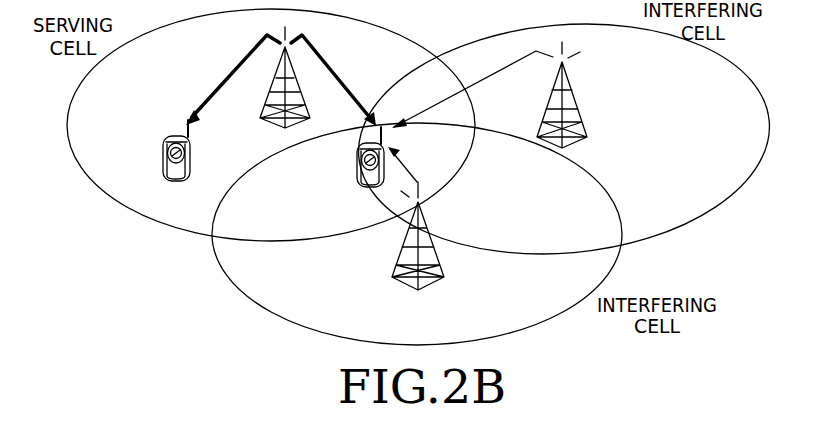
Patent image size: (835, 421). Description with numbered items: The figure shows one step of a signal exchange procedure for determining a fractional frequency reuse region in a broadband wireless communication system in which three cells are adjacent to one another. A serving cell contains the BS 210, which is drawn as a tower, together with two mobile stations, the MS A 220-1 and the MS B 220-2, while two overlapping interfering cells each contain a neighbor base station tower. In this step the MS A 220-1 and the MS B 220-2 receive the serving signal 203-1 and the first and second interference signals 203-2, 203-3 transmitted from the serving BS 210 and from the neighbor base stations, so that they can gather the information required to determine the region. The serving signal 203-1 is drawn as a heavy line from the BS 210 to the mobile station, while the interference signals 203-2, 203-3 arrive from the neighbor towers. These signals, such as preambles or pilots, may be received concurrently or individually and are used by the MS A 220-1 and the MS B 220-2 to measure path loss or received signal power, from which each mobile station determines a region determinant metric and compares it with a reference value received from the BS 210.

The BS 210 is at (285, 101).
The MS A 220-1 is at (342, 174).
The MS B 220-2 is at (142, 150).
The signal S_A 203-1 is at (351, 80).
The signal I_1 203-2 is at (472, 89).
The signal I_2 203-3 is at (442, 164).